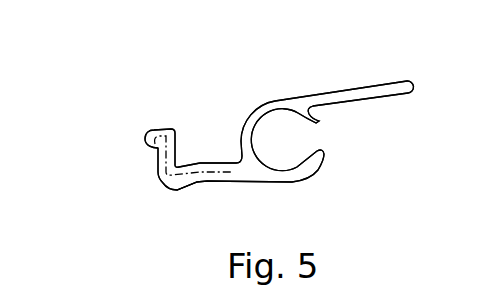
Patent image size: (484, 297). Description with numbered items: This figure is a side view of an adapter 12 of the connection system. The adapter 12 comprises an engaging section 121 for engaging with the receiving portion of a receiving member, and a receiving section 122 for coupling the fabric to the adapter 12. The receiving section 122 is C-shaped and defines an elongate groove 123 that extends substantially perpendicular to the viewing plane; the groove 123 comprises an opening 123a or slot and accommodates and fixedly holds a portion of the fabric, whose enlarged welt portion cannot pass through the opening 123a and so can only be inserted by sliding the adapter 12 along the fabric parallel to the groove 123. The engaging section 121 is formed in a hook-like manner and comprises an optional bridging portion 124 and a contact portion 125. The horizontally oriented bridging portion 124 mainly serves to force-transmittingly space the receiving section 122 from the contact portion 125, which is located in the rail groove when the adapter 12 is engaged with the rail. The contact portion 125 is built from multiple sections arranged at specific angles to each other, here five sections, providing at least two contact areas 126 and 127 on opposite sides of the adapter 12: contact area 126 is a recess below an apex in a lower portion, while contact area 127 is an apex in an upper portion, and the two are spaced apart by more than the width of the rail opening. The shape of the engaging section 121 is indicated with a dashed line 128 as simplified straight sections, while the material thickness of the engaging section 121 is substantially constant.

The adapter 12 is at (185, 73).
The engaging section 121 is at (152, 207).
The receiving section 122 is at (332, 190).
The groove 123 is at (277, 125).
The opening 123a is at (322, 135).
The bridging portion 124 is at (235, 185).
The contact portion 125 is at (140, 163).
The contact area 126 is at (200, 185).
The contact area 127 is at (167, 125).
The dashed line 128 is at (224, 166).